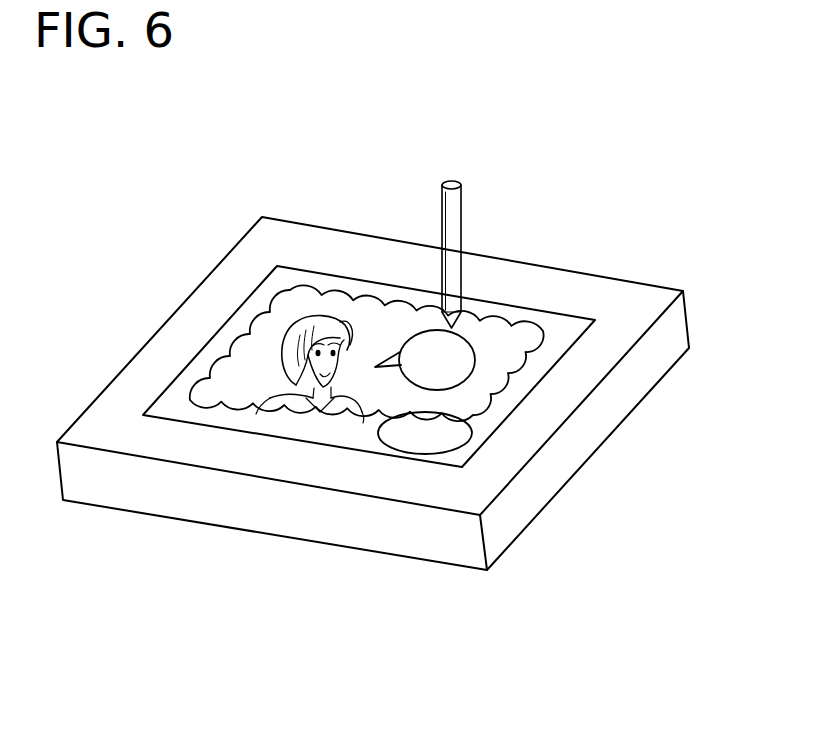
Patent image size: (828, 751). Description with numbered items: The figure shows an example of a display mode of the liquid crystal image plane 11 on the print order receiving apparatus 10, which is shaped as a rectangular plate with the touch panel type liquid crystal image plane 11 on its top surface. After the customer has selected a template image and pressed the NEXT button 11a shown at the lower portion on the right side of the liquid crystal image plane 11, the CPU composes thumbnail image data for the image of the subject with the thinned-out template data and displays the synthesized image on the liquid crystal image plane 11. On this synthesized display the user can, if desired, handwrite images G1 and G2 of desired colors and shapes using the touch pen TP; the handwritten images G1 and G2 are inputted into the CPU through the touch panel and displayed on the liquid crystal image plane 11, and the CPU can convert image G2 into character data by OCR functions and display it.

The print order receiving apparatus 10 is at (615, 277).
The liquid crystal image plane 11 is at (557, 340).
The NEXT button 11a is at (412, 455).
The handwritten image G1 is at (467, 325).
The handwritten image G2 is at (423, 380).
The touch pen TP is at (453, 200).